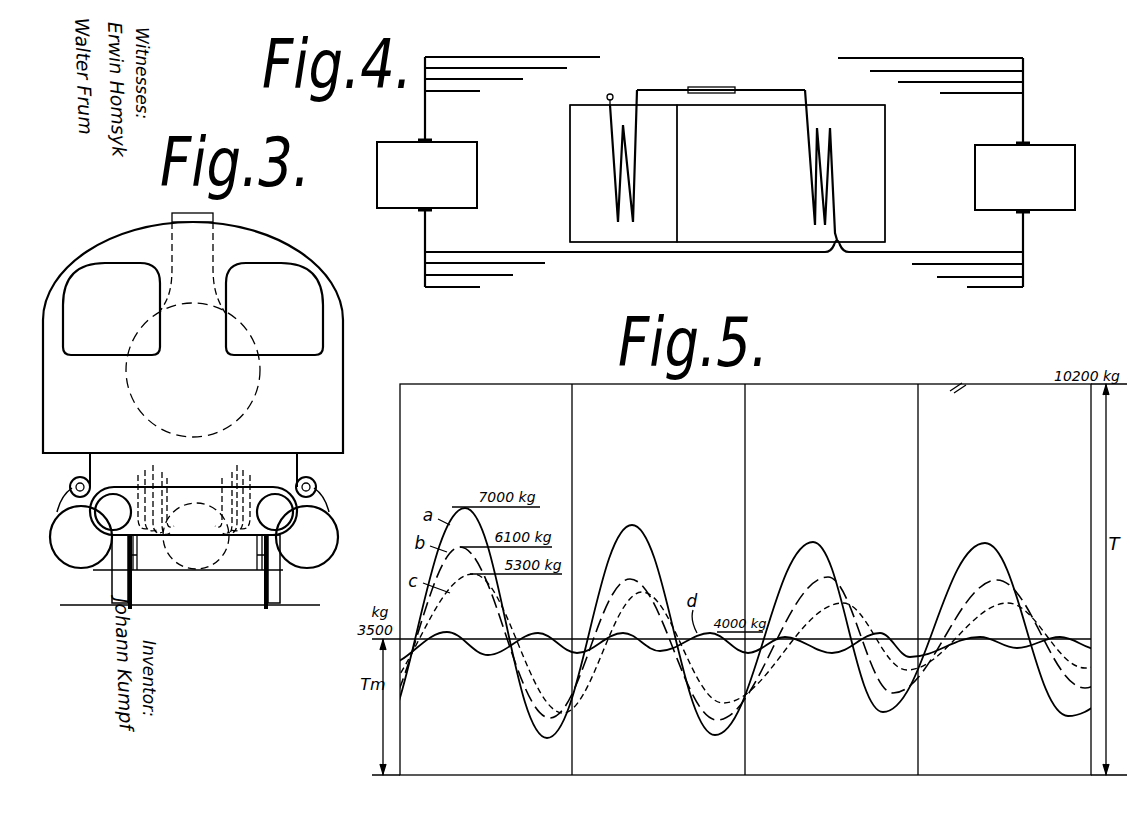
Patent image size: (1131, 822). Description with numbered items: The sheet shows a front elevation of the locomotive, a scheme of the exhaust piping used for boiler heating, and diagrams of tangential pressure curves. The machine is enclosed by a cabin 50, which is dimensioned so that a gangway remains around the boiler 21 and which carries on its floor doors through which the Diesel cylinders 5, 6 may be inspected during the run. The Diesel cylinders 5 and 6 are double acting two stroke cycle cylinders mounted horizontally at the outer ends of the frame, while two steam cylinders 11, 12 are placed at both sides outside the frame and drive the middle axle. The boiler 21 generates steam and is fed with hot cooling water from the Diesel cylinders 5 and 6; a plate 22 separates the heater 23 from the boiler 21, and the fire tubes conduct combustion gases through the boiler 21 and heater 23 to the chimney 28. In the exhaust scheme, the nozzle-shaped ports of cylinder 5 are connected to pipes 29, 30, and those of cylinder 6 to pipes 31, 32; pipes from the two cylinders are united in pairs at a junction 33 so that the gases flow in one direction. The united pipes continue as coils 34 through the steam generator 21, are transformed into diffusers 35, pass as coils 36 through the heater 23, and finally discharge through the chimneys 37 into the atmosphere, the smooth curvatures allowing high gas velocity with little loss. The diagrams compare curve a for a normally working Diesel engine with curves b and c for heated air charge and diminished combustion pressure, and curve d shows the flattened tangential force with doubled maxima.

In FIG. 4, the Diesel cylinder 5 is at (470, 185).
In FIG. 4, the Diesel cylinder 6 is at (980, 175).
In FIG. 3, the steam cylinder 11 is at (327, 557).
In FIG. 3, the steam cylinder 12 is at (67, 557).
In FIG. 3, the boiler 21 is at (132, 398).
In FIG. 4, the boiler 21 is at (872, 167).
In FIG. 4, the plate 22 is at (678, 185).
In FIG. 4, the heater 23 is at (577, 187).
In FIG. 3, the chimney 28 is at (170, 218).
In FIG. 3, the exhaust pipe 29 is at (160, 543).
In FIG. 4, the exhaust pipe 29 is at (472, 92).
In FIG. 3, the exhaust pipe 30 is at (239, 543).
In FIG. 4, the exhaust pipe 30 is at (473, 252).
In FIG. 4, the exhaust pipe 31 is at (930, 72).
In FIG. 4, the exhaust pipe 32 is at (953, 276).
In FIG. 4, the junction 33 is at (840, 232).
In FIG. 4, the coil 34 is at (808, 178).
In FIG. 4, the diffuser 35 is at (698, 87).
In FIG. 4, the coil 36 is at (637, 203).
In FIG. 4, the chimney 37 is at (609, 94).
In FIG. 3, the cabin 50 is at (287, 241).